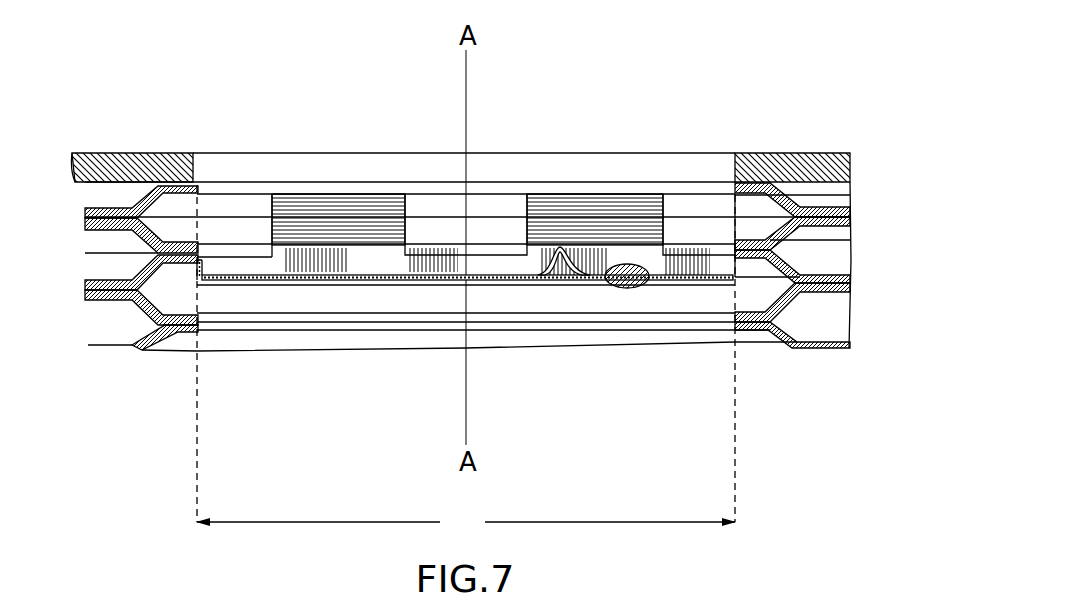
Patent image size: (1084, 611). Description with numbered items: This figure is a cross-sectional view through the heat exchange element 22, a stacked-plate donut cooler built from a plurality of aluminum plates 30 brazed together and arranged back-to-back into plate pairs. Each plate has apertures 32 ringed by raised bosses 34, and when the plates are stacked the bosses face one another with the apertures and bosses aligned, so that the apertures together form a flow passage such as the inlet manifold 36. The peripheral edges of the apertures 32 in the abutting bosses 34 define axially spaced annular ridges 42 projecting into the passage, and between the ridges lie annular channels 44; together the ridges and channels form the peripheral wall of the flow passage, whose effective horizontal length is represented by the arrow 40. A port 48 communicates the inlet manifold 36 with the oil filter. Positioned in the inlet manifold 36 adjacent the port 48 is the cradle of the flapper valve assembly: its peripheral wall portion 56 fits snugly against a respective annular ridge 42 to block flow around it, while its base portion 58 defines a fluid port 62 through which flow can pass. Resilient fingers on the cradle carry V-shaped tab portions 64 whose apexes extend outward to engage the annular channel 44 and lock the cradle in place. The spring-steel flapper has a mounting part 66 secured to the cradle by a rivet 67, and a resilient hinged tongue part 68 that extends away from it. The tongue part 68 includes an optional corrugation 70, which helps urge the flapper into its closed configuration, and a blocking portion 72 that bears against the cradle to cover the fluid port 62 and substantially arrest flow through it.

The heat exchange element 22 is at (755, 72).
The plates 30 is at (850, 193).
The apertures 32 is at (233, 184).
The raised bosses 34 is at (130, 195).
The inlet manifold 36 is at (482, 337).
The arrow representing effective horizontal length 40 is at (466, 360).
The annular ridges 42 is at (194, 232).
The annular channels 44 is at (170, 207).
The port 48 is at (640, 166).
The peripheral wall portion 56 is at (210, 270).
The base portion 58 is at (244, 280).
The fluid port 62 is at (298, 288).
The V-shaped tab portion 64 is at (412, 210).
The mounting part 66 is at (687, 264).
The rivet 67 is at (624, 289).
The tongue part 68 is at (352, 256).
The corrugation 70 is at (565, 229).
The blocking portion 72 is at (305, 259).